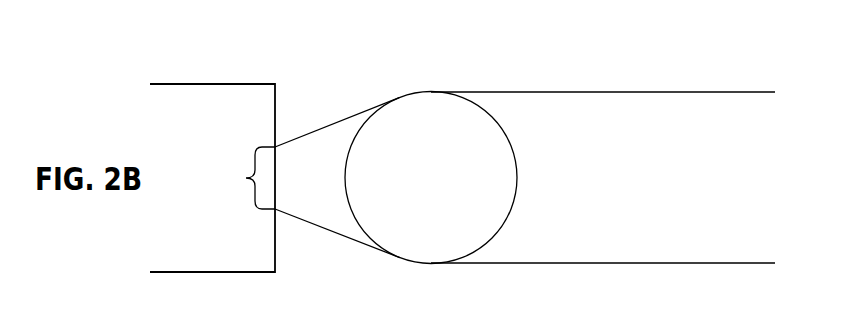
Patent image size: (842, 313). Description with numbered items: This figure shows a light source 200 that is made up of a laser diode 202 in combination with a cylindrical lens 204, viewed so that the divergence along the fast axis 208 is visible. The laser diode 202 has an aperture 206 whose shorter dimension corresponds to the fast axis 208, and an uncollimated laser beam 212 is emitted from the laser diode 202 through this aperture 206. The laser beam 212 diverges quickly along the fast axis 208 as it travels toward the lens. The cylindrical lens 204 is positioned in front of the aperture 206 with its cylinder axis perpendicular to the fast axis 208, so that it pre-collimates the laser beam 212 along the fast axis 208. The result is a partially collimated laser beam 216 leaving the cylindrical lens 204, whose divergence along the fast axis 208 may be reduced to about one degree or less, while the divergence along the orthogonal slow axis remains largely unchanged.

The light source 200 is at (697, 178).
The laser diode 202 is at (212, 84).
The cylindrical lens 204 is at (431, 178).
The aperture 206 is at (275, 178).
The fast axis 208 is at (239, 178).
The uncollimated laser beam 212 is at (320, 127).
The partially collimated laser beam 216 is at (525, 92).